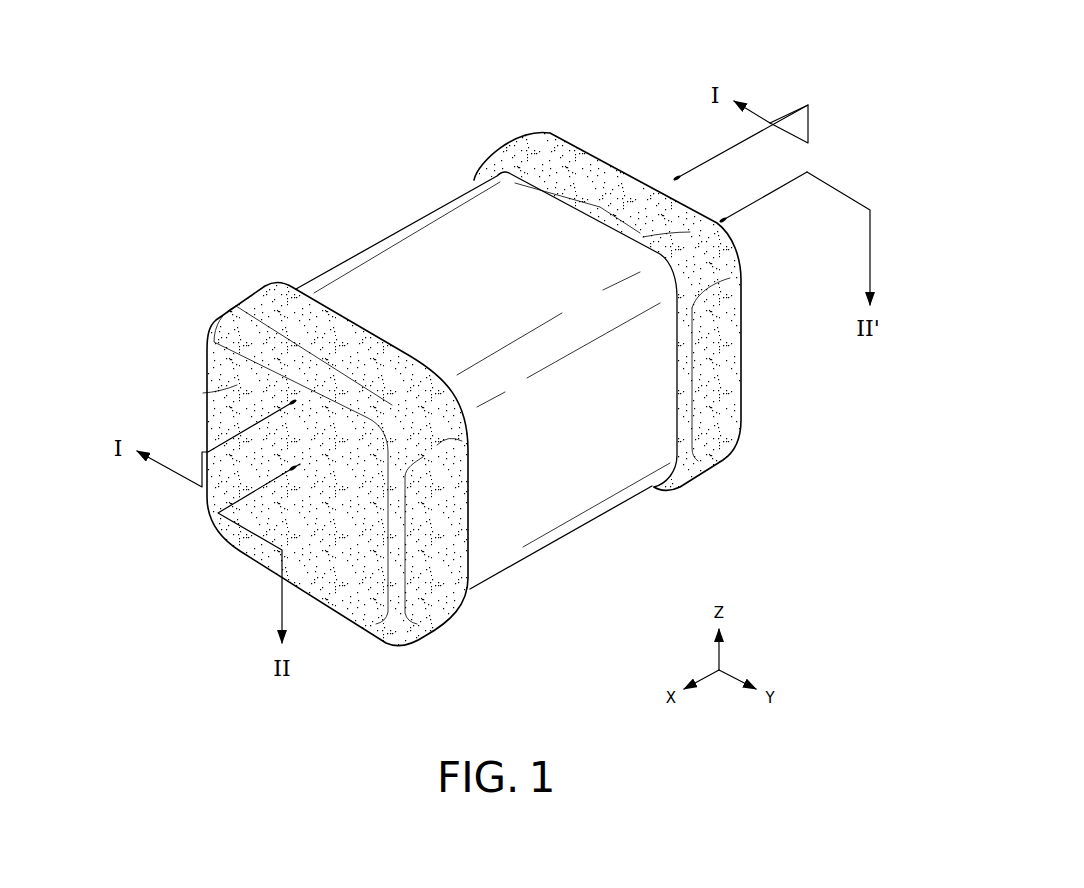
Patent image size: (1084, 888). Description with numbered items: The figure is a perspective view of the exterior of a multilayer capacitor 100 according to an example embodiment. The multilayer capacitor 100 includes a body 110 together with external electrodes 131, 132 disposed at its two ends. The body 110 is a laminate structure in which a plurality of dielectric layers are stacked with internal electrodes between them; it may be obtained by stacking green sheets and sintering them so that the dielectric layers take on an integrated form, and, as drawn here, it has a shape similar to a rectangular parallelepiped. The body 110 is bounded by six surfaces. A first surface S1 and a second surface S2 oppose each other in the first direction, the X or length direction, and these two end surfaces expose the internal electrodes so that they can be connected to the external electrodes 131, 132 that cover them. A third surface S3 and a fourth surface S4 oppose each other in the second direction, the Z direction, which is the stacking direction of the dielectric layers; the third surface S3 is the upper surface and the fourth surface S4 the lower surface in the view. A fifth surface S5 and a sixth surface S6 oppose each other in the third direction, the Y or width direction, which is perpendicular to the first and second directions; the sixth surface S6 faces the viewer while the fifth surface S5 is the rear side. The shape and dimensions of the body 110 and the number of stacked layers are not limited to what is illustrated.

The multilayer capacitor 100 is at (466, 31).
The body 110 is at (413, 243).
The external electrode 131 is at (240, 383).
The external electrode 132 is at (600, 174).
The first surface S1 is at (246, 541).
The second surface S2 is at (710, 333).
The third surface S3 is at (467, 223).
The fourth surface S4 is at (492, 530).
The fifth surface S5 is at (413, 271).
The sixth surface S6 is at (567, 489).